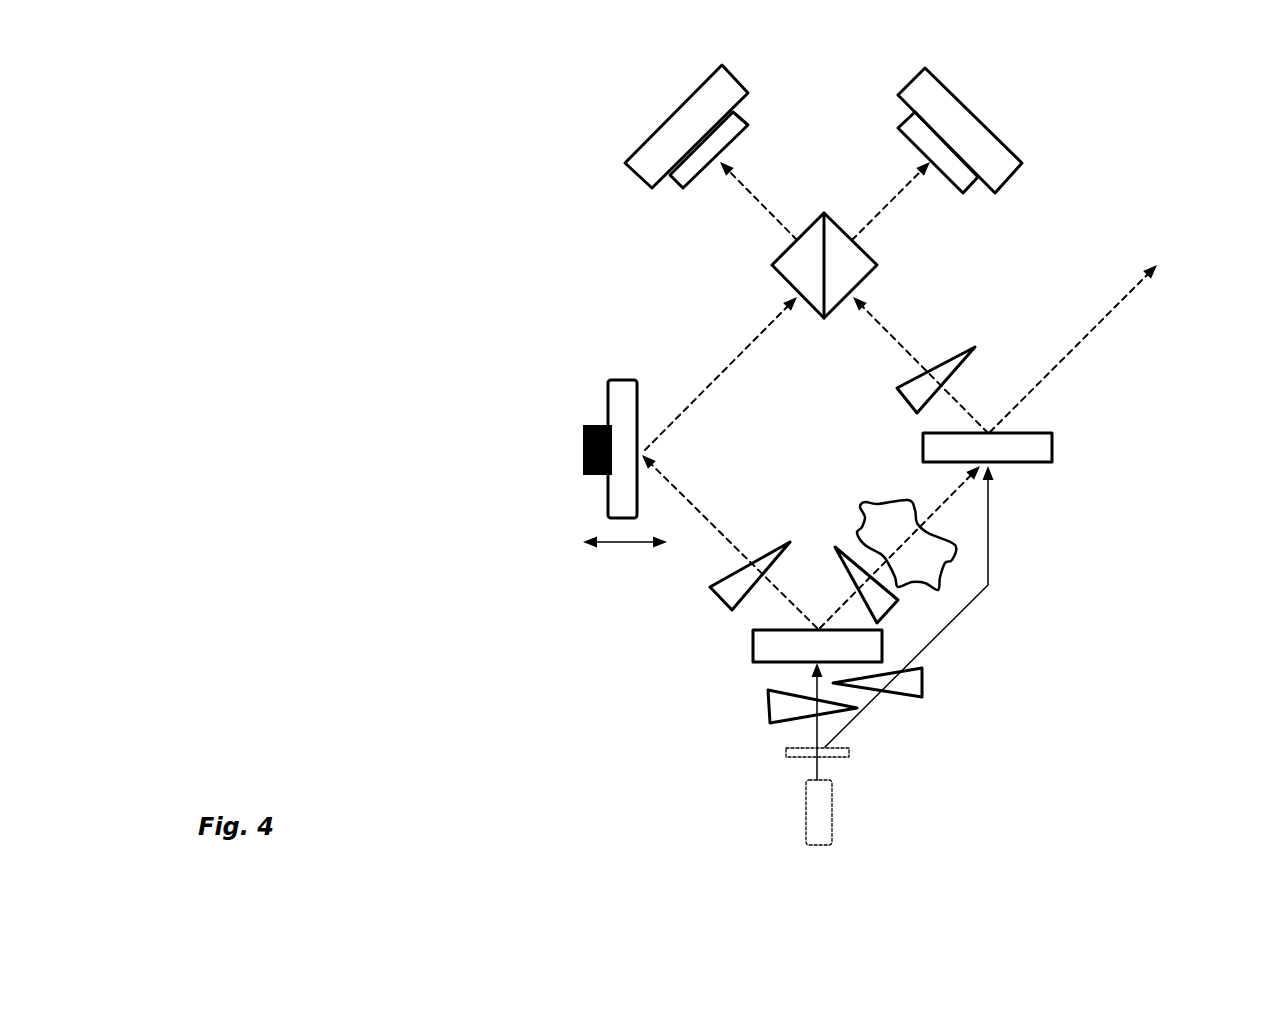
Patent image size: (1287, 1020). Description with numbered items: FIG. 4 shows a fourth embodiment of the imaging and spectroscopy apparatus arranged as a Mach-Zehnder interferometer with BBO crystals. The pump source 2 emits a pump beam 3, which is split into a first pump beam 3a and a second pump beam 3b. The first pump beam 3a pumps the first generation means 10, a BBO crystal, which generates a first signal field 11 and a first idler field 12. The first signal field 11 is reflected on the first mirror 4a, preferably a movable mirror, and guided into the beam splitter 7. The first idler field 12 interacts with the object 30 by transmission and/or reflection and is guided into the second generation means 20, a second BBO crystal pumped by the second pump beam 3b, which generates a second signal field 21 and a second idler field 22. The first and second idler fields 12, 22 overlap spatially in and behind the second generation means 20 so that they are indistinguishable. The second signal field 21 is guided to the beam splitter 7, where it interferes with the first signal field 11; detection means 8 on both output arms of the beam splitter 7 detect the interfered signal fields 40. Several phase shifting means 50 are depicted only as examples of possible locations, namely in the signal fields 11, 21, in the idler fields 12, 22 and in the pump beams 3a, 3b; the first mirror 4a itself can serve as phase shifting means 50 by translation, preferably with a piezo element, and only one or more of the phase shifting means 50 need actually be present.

The pump source 2 is at (815, 830).
The pump beam 3 is at (820, 765).
The first pump beam 3a is at (815, 727).
The second pump beam 3b is at (965, 612).
The first mirror 4a is at (625, 410).
The beam splitter 7 is at (800, 266).
The detection means 8 is at (680, 128).
The first generation means 10 is at (765, 640).
The first signal field 11 is at (705, 380).
The first idler field 12 is at (946, 500).
The second generation means 20 is at (1050, 450).
The second signal field 21 is at (914, 350).
The second idler field 22 is at (1075, 348).
The object 30 is at (870, 515).
The interfered signal fields 40 is at (893, 193).
The phase shifting means 50 is at (948, 370).